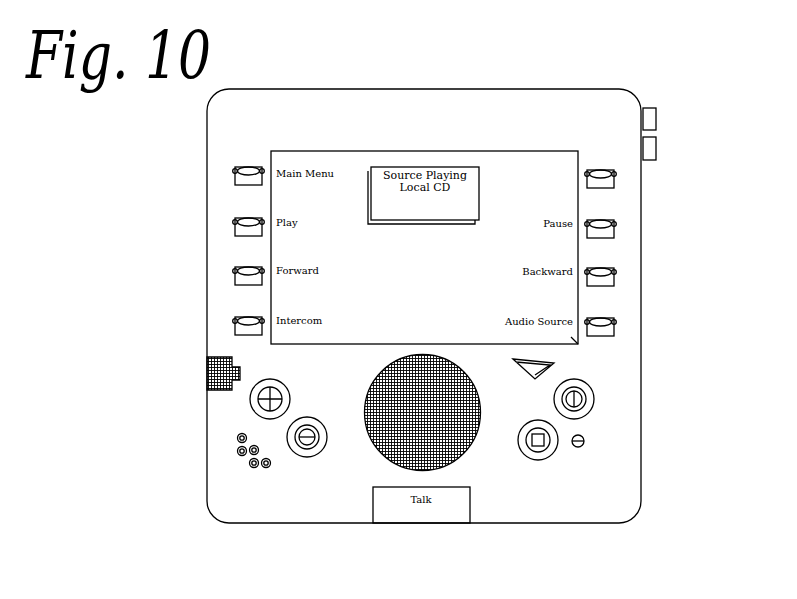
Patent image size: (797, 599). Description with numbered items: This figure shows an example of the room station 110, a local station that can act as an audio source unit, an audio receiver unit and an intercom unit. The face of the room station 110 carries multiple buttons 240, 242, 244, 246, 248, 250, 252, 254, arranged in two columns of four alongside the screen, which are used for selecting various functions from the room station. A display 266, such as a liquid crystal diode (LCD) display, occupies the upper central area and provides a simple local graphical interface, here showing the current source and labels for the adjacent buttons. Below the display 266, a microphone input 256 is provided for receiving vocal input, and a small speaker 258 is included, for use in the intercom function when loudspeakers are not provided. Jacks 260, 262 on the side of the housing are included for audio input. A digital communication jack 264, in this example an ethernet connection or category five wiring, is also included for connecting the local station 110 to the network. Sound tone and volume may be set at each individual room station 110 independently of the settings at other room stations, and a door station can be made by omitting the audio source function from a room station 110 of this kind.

The room station 110 is at (585, 523).
The button 240 is at (236, 172).
The button 242 is at (236, 222).
The button 244 is at (236, 271).
The button 246 is at (236, 321).
The button 248 is at (614, 182).
The button 250 is at (614, 232).
The button 252 is at (614, 280).
The button 254 is at (614, 330).
The microphone input 256 is at (238, 451).
The small speaker 258 is at (447, 440).
The jack 260 is at (657, 120).
The jack 262 is at (657, 148).
The digital communication jack 264 is at (207, 372).
The display 266 is at (579, 345).